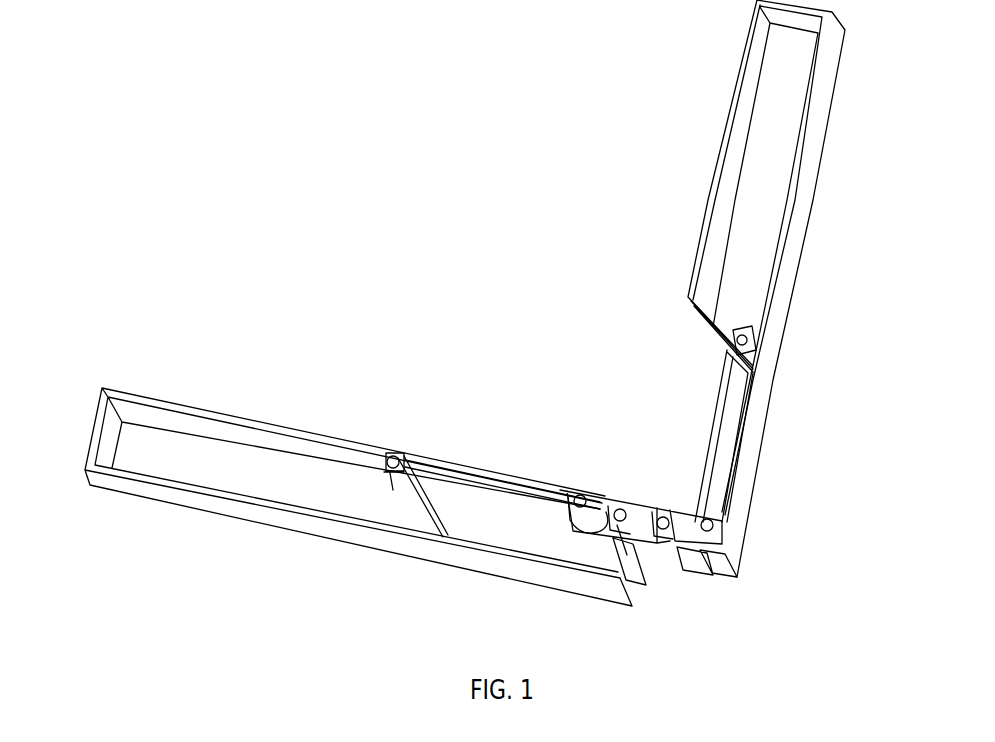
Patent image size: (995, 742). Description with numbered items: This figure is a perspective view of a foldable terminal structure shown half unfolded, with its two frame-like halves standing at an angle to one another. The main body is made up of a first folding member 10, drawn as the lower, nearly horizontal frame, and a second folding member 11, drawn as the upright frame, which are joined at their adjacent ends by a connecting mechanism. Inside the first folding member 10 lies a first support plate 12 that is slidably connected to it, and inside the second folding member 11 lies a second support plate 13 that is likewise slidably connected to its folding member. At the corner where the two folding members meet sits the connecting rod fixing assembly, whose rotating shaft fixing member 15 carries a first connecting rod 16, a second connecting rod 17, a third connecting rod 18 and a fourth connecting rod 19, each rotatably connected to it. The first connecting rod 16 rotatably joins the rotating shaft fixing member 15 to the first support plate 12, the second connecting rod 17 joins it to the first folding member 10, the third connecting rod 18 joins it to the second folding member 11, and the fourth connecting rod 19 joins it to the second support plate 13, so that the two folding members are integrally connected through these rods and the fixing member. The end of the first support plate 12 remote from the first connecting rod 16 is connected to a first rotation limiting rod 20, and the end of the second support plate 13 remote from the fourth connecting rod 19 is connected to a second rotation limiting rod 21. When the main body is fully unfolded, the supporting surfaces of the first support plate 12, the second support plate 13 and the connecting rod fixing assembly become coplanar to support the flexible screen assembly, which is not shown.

The first folding member 10 is at (295, 518).
The second folding member 11 is at (795, 245).
The first support plate 12 is at (517, 480).
The second support plate 13 is at (712, 438).
The rotating shaft fixing member 15 is at (632, 507).
The first connecting rod 16 is at (578, 506).
The second connecting rod 17 is at (611, 526).
The third connecting rod 18 is at (666, 534).
The fourth connecting rod 19 is at (714, 528).
The first rotation limiting rod 20 is at (430, 503).
The second rotation limiting rod 21 is at (690, 306).